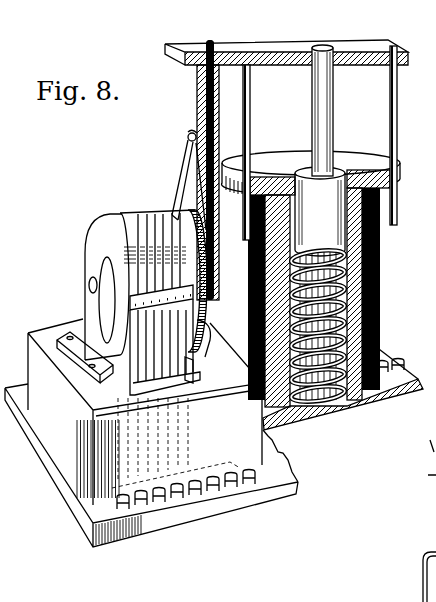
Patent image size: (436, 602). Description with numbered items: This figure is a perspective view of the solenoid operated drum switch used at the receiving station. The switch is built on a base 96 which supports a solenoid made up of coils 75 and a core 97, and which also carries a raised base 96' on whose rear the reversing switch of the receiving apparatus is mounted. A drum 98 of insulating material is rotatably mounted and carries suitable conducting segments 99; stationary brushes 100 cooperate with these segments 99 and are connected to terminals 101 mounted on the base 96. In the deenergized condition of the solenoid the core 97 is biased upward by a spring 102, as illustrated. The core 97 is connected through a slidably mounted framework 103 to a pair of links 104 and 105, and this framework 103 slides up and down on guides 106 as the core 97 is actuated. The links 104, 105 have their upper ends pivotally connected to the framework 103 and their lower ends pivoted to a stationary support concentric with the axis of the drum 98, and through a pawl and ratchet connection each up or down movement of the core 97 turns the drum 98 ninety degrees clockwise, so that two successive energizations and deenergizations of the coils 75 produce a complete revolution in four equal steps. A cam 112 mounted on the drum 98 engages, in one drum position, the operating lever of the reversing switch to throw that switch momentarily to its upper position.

The coils 75 is at (377, 281).
The base 96 is at (151, 465).
The raised base 96' is at (131, 412).
The core 97 is at (341, 170).
The drum 98 is at (90, 247).
The conducting segments 99 is at (113, 217).
The stationary brushes 100 is at (130, 308).
The terminals 101 is at (118, 510).
The spring 102 is at (336, 409).
The framework 103 is at (270, 44).
The link 104 is at (207, 211).
The link 105 is at (183, 177).
The guides 106 is at (220, 105).
The cam 112 is at (203, 350).